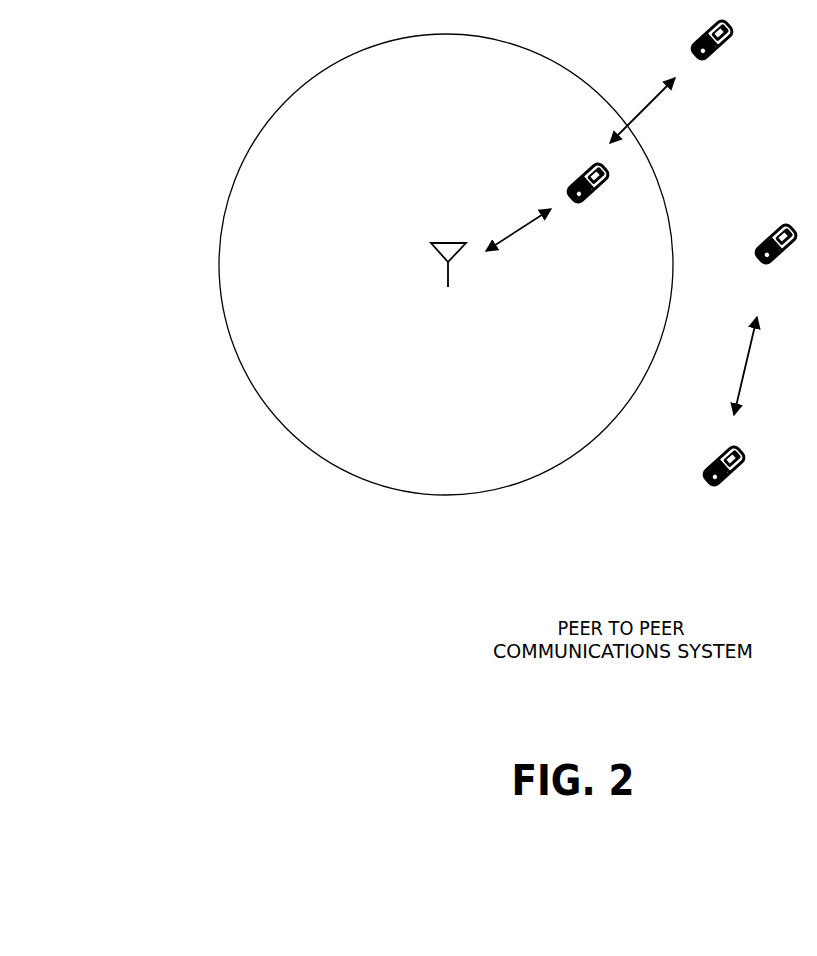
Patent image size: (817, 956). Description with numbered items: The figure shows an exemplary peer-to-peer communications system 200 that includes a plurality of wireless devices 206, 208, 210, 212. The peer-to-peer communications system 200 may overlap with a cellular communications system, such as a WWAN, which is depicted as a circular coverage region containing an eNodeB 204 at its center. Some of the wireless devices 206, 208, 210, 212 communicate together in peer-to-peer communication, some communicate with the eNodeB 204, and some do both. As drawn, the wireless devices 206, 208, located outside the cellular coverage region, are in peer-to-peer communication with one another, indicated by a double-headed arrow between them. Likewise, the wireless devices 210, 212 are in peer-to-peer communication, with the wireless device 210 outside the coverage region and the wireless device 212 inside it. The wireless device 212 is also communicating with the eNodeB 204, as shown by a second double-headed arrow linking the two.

The peer-to-peer communications system 200 is at (176, 63).
The eNodeB 204 is at (449, 282).
The wireless device 206 is at (776, 259).
The wireless device 208 is at (724, 484).
The wireless device 210 is at (712, 56).
The wireless device 212 is at (588, 198).